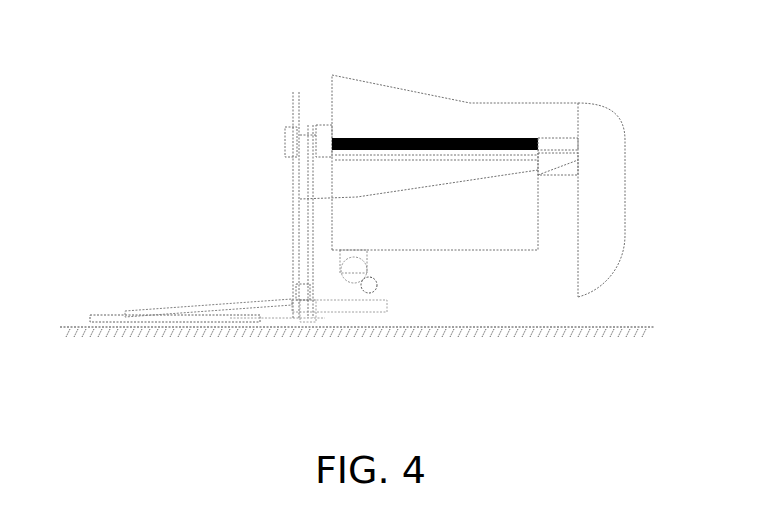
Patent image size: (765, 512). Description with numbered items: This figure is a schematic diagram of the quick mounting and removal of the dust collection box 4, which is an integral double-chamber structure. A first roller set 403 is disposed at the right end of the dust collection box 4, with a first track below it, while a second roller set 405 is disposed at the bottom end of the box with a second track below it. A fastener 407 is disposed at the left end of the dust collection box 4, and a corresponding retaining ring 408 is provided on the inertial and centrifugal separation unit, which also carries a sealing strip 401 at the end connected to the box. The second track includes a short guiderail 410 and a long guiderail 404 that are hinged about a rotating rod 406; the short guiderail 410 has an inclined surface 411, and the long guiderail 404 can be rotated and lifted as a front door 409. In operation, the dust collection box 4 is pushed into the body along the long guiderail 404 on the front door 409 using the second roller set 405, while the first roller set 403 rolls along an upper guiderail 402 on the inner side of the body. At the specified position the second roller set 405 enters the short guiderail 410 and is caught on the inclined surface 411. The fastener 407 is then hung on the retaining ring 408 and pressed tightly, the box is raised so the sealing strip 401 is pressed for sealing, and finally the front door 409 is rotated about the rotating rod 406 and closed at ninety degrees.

The dust collection box 4 is at (528, 222).
The sealing strip 401 is at (367, 138).
The upper guiderail 402 is at (433, 190).
The first roller set 403 is at (578, 140).
The long guiderail 404 is at (203, 305).
The second roller set 405 is at (298, 288).
The rotating rod 406 is at (297, 318).
The fastener 407 is at (300, 199).
The retaining ring 408 is at (330, 130).
The front door 409 is at (128, 310).
The short guiderail 410 is at (327, 312).
The inclined surface 411 is at (372, 307).